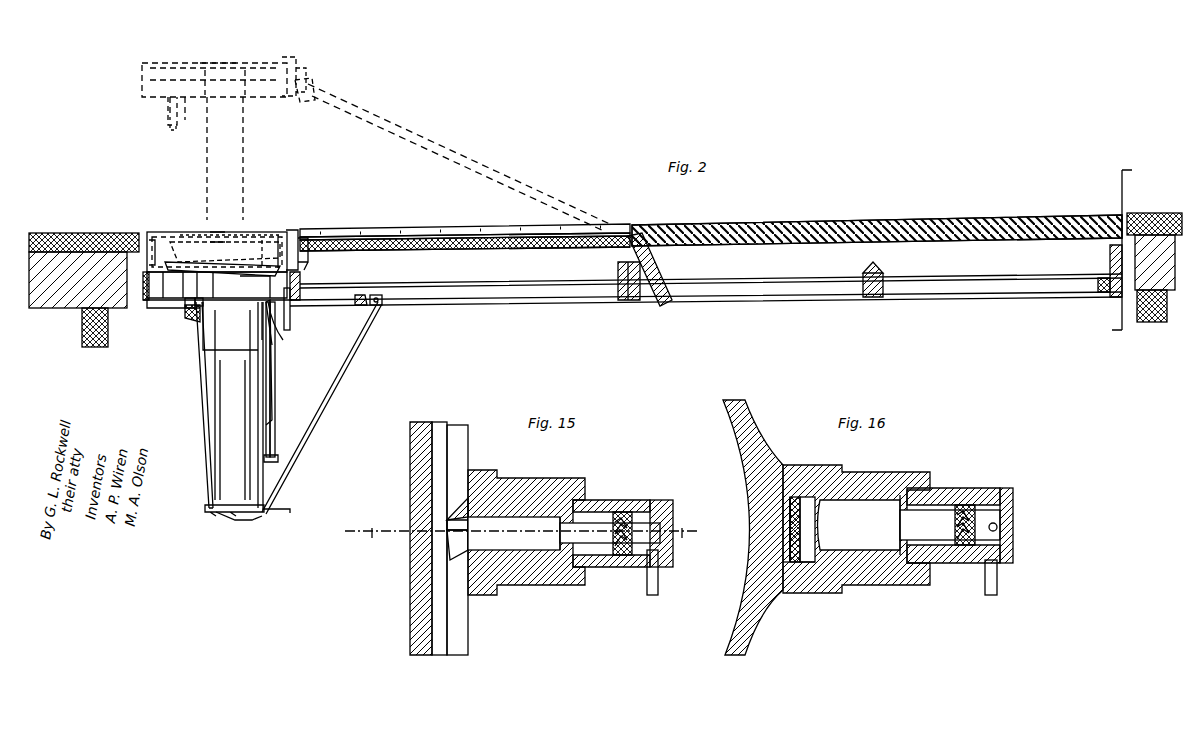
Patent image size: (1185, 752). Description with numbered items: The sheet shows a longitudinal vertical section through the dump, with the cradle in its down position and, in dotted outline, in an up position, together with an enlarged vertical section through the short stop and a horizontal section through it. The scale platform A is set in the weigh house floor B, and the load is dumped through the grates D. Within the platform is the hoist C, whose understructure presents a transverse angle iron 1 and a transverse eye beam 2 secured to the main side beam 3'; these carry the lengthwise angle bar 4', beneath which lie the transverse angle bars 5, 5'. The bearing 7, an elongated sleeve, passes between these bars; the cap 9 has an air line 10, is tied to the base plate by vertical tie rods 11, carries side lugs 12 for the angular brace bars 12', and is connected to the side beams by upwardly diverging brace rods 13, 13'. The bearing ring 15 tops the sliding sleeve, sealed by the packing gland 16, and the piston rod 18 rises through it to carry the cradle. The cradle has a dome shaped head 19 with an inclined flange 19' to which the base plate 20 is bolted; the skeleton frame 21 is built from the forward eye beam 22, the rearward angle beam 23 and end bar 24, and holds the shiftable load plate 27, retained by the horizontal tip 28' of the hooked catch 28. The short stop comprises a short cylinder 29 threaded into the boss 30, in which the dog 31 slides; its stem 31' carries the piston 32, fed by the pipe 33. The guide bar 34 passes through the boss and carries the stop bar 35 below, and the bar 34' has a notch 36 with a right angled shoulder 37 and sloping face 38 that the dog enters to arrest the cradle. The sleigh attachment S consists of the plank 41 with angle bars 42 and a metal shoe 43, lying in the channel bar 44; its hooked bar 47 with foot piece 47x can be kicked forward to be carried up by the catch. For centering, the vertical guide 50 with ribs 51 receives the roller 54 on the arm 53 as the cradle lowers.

In FIG. 2, the weigh house floor B is at (115, 232).
In FIG. 2, the grates D is at (776, 225).
In FIG. 2, the sleigh attachment S is at (462, 160).
In FIG. 2, the scale platform A is at (545, 278).
In FIG. 2, the hoist C is at (205, 362).
In FIG. 2, the transverse angle iron 1 is at (147, 296).
In FIG. 2, the transverse eye beam 2 is at (380, 300).
In FIG. 2, the main side beam 3' is at (706, 311).
In FIG. 2, the lengthwise extending angle bar 4' is at (373, 324).
In FIG. 2, the transversely extending angle bar 5 is at (179, 330).
In FIG. 2, the transversely extending angle bar 5' is at (286, 323).
In FIG. 15, the bearing 7 is at (410, 516).
In FIG. 16, the bearing 7 is at (760, 442).
In FIG. 2, the cap 9 is at (206, 509).
In FIG. 2, the air line 10 is at (285, 513).
In FIG. 2, the vertical tie rods 11 is at (213, 440).
In FIG. 2, the side lugs 12 is at (239, 528).
In FIG. 2, the brace bars 12' is at (322, 408).
In FIG. 2, the brace rods 13 is at (209, 349).
In FIG. 2, the brace rods 13' is at (292, 362).
In FIG. 2, the bearing ring 15 is at (214, 91).
In FIG. 15, the packing gland 16 is at (523, 536).
In FIG. 16, the packing gland 16 is at (997, 527).
In FIG. 2, the piston rod 18 is at (243, 153).
In FIG. 2, the dome shaped head 19 is at (225, 248).
In FIG. 2, the inclined flange 19' is at (222, 277).
In FIG. 2, the base plate 20 is at (224, 235).
In FIG. 2, the skeleton frame 21 is at (160, 236).
In FIG. 2, the forward transverse eye beam 22 is at (150, 236).
In FIG. 2, the rearward transverse angle beam 23 is at (282, 232).
In FIG. 2, the end bar 24 is at (208, 235).
In FIG. 2, the load plate 27 is at (262, 235).
In FIG. 2, the hooked shaped catch 28 is at (318, 170).
In FIG. 2, the horizontal tip 28' is at (302, 151).
In FIG. 2, the short cylinder 29 is at (300, 279).
In FIG. 15, the short cylinder 29 is at (665, 500).
In FIG. 16, the short cylinder 29 is at (1008, 490).
In FIG. 2, the boss 30 is at (262, 285).
In FIG. 15, the boss 30 is at (545, 468).
In FIG. 16, the boss 30 is at (878, 480).
In FIG. 15, the dog or stop 31 is at (514, 533).
In FIG. 16, the dog or stop 31 is at (859, 525).
In FIG. 15, the stem 31' is at (610, 518).
In FIG. 16, the stem 31' is at (950, 509).
In FIG. 15, the piston 32 is at (622, 556).
In FIG. 16, the piston 32 is at (966, 565).
In FIG. 2, the pipe 33 is at (290, 318).
In FIG. 15, the pipe 33 is at (658, 588).
In FIG. 16, the pipe 33 is at (997, 580).
In FIG. 2, the guide bar 34 is at (286, 379).
In FIG. 15, the guide bar 34 is at (446, 528).
In FIG. 16, the guide bar 34 is at (767, 529).
In FIG. 2, the notched bar 34' is at (290, 379).
In FIG. 15, the notched bar 34' is at (473, 532).
In FIG. 16, the notched bar 34' is at (801, 591).
In FIG. 2, the stop bar 35 is at (278, 460).
In FIG. 2, the notch 36 is at (272, 345).
In FIG. 15, the notch 36 is at (450, 525).
In FIG. 16, the notch 36 is at (795, 525).
In FIG. 15, the right angled shoulder 37 is at (455, 540).
In FIG. 16, the right angled shoulder 37 is at (812, 495).
In FIG. 15, the sloping face 38 is at (455, 512).
In FIG. 2, the plank 41 is at (500, 232).
In FIG. 2, the angle bars 42 is at (425, 232).
In FIG. 2, the metal shoe 43 is at (626, 232).
In FIG. 2, the channel bar 44 is at (462, 249).
In FIG. 2, the hooked bar 47 is at (315, 84).
In FIG. 2, the foot piece 47x is at (305, 78).
In FIG. 2, the vertical guide 50 is at (187, 303).
In FIG. 2, the ribs 51 is at (197, 305).
In FIG. 2, the vertical arm 53 is at (168, 113).
In FIG. 2, the roller 54 is at (170, 130).